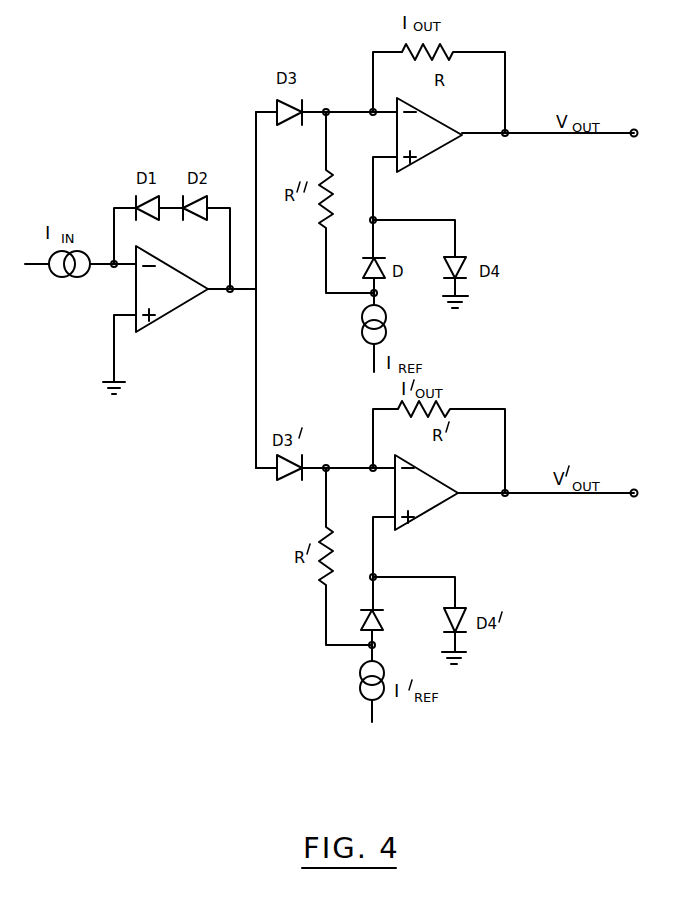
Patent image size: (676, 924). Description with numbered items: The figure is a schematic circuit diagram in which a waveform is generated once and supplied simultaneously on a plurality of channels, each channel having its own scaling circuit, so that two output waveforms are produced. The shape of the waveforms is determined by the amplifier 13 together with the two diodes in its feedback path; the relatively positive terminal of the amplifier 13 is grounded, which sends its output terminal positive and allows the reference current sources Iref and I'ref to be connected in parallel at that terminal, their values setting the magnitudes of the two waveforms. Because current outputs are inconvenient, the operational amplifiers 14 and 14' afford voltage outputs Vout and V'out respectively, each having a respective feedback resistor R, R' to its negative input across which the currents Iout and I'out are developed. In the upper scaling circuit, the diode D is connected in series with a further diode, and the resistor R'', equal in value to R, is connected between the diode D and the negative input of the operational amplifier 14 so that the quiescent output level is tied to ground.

The amplifier 13 is at (171, 316).
The operational amplifier 14 is at (431, 145).
The operational amplifier 14' is at (432, 503).